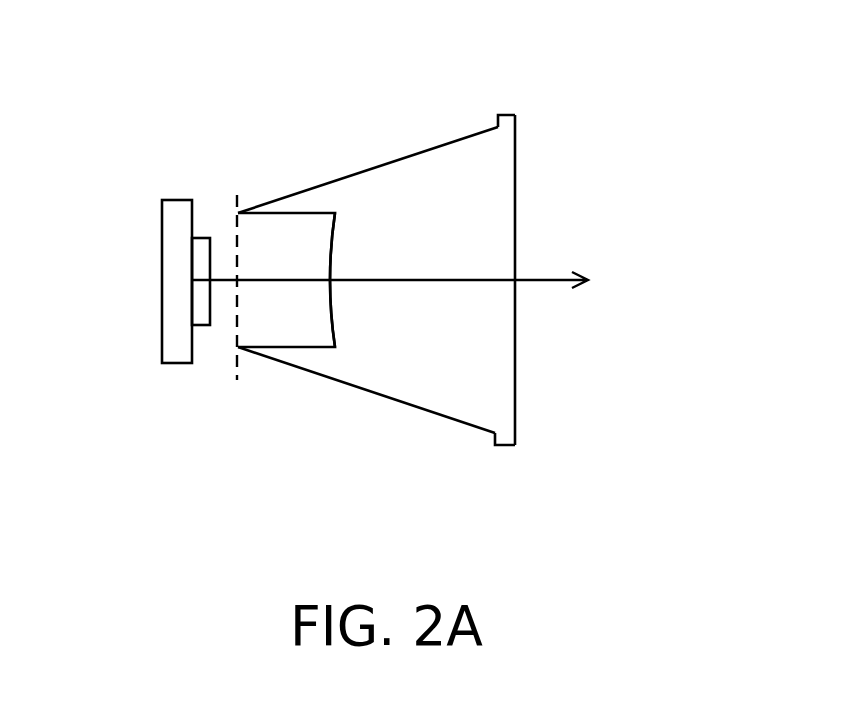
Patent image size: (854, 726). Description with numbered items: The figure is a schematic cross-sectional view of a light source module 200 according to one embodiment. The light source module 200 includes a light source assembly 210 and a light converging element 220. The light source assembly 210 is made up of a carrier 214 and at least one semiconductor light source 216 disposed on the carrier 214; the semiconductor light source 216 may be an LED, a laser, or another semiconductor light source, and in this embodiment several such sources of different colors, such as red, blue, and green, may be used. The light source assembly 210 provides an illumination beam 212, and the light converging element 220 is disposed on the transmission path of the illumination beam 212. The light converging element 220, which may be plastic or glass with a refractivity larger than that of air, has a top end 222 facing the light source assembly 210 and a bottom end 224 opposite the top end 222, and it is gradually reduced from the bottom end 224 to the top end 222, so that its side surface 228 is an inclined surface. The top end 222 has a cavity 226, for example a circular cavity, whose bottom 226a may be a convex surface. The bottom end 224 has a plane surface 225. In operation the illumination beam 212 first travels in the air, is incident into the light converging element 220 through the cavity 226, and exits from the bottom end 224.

The light source module 200 is at (690, 541).
The light source assembly 210 is at (130, 305).
The carrier 214 is at (177, 215).
The semiconductor light source 216 is at (212, 243).
The top end 222 is at (222, 252).
The cavity 226 is at (262, 329).
The bottom of the cavity 226a is at (326, 321).
The side surface 228 is at (426, 143).
The light converging element 220 is at (438, 276).
The plane surface 225 is at (531, 153).
The bottom end 224 is at (505, 445).
The illumination beam 212 is at (540, 278).